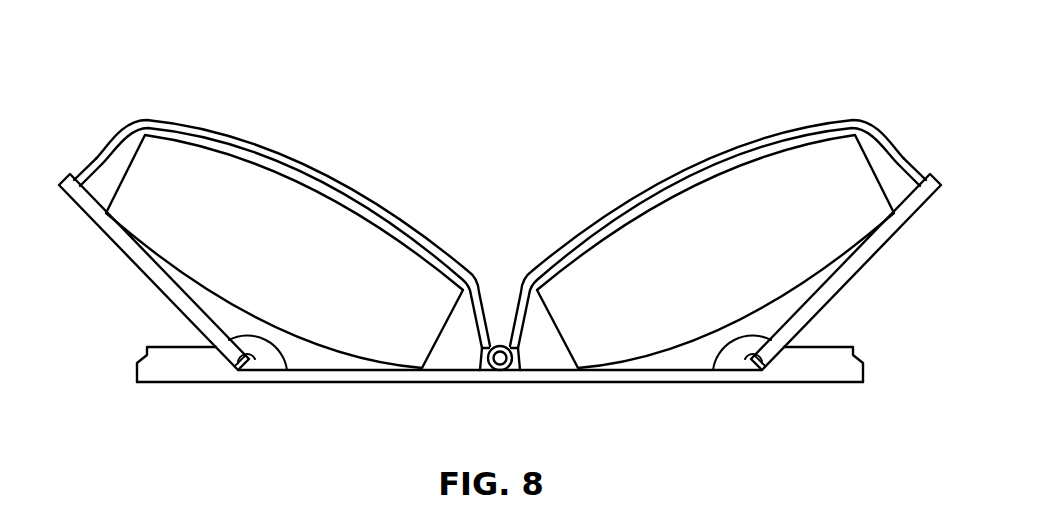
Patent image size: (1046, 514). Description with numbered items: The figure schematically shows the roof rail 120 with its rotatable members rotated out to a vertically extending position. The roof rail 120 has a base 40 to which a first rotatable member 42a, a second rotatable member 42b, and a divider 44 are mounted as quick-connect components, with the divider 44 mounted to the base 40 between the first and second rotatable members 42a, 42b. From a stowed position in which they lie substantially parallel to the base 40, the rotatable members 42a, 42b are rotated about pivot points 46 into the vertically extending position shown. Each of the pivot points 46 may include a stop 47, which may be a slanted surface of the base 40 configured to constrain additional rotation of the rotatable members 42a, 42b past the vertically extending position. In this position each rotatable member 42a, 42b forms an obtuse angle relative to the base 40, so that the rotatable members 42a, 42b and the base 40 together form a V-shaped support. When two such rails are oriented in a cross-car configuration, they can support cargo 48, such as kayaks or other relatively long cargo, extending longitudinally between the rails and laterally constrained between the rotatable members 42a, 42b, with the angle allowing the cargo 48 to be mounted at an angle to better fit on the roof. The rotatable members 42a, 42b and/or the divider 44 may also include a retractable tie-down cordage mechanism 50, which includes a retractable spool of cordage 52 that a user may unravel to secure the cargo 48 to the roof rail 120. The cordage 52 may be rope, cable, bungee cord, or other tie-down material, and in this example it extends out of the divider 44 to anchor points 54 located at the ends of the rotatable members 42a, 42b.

The roof rail 120 is at (143, 52).
The base 40 is at (698, 383).
The first rotatable member 42a is at (149, 279).
The second rotatable member 42b is at (851, 279).
The divider 44 is at (519, 360).
The pivot points 46 is at (242, 371).
The stop 47 is at (241, 358).
The cargo 48 is at (271, 241).
The retractable tie-down cordage mechanism 50 is at (499, 361).
The cordage 52 is at (528, 268).
The anchor points 54 is at (73, 177).